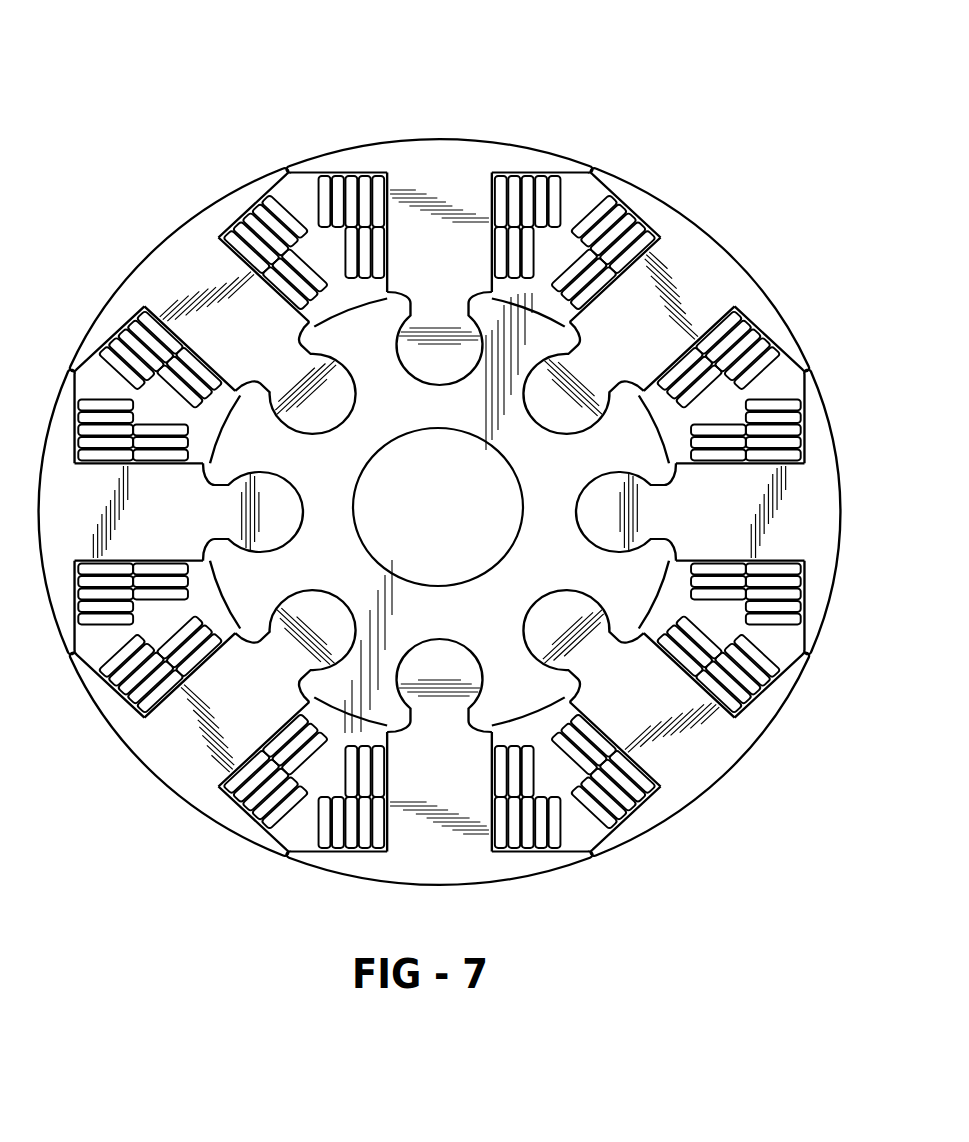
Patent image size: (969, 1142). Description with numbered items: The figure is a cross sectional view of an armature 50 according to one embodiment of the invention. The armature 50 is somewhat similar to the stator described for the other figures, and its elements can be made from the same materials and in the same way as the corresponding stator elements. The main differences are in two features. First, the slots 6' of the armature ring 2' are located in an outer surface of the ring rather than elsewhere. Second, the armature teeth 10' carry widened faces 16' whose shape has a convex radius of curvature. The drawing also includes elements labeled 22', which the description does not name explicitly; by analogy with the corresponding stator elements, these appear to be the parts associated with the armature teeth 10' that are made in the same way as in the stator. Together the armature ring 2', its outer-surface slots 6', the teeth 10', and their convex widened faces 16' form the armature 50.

The armature 50 is at (100, 192).
The armature teeth 10' is at (444, 445).
The widened faces 16' is at (440, 470).
The winding coil 22' is at (463, 461).
The slots 6' is at (439, 512).
The armature ring 2' is at (420, 507).